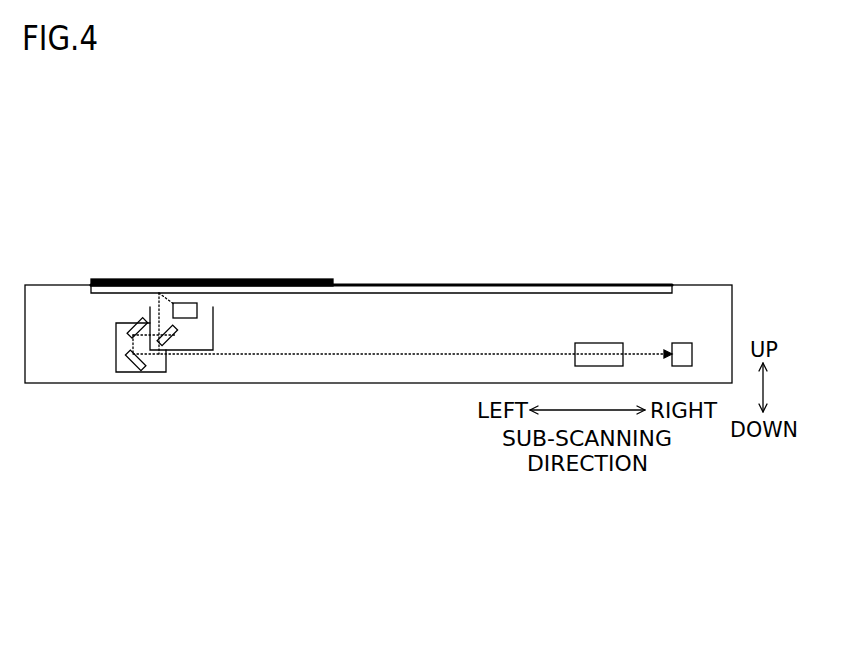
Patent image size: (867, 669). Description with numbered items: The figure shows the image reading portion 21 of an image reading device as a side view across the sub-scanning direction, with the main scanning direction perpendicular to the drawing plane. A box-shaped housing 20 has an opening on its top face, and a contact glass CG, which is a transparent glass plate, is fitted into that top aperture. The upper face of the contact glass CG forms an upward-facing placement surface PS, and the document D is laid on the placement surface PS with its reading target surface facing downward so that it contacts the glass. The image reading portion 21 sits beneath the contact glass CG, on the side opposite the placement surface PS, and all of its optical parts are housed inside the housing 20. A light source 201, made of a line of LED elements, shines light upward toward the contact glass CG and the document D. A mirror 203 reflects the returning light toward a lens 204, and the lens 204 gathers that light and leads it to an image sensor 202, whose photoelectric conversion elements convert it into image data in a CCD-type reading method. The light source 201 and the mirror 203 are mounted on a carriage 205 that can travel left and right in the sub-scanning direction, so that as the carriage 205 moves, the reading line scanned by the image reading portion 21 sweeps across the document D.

The housing 20 is at (695, 284).
The image reading portion 21 is at (716, 329).
The light source 201 is at (197, 312).
The image sensor 202 is at (683, 343).
The mirror 203 is at (128, 326).
The lens 204 is at (600, 343).
The carriage 205 is at (145, 372).
The document D is at (291, 278).
The placement surface PS is at (467, 285).
The contact glass CG is at (415, 293).